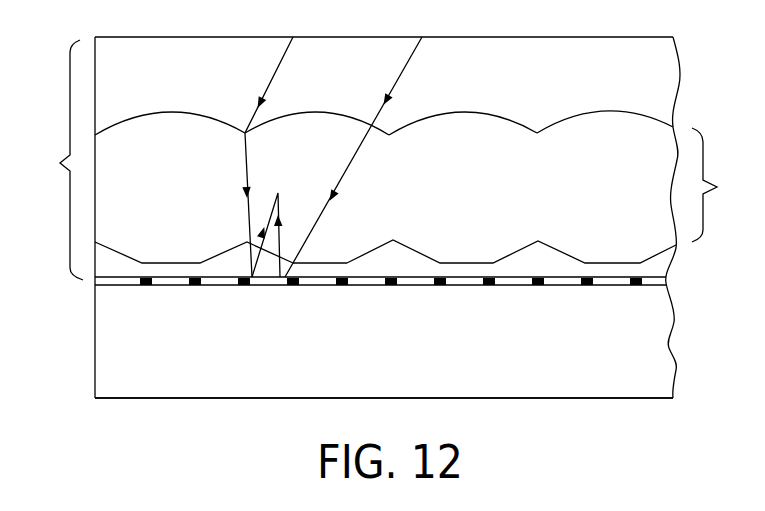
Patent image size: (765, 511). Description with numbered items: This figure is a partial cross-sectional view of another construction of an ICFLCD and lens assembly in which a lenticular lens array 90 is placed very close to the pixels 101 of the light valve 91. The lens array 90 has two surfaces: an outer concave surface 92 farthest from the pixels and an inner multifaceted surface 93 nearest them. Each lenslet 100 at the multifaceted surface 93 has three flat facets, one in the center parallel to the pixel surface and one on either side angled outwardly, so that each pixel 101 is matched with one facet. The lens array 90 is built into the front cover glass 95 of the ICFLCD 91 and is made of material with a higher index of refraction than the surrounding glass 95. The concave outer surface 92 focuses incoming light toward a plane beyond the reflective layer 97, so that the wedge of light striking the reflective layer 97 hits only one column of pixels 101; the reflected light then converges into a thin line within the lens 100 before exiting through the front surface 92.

The lenticular lens array 90 is at (719, 185).
The light valve 91 is at (658, 360).
The outer concave surface 92 is at (573, 117).
The inner multifaceted surface 93 is at (512, 252).
The front cover glass 95 is at (56, 160).
The reflective layer 97 is at (652, 286).
The lenslet 100 is at (332, 262).
The pixels 101 is at (267, 287).